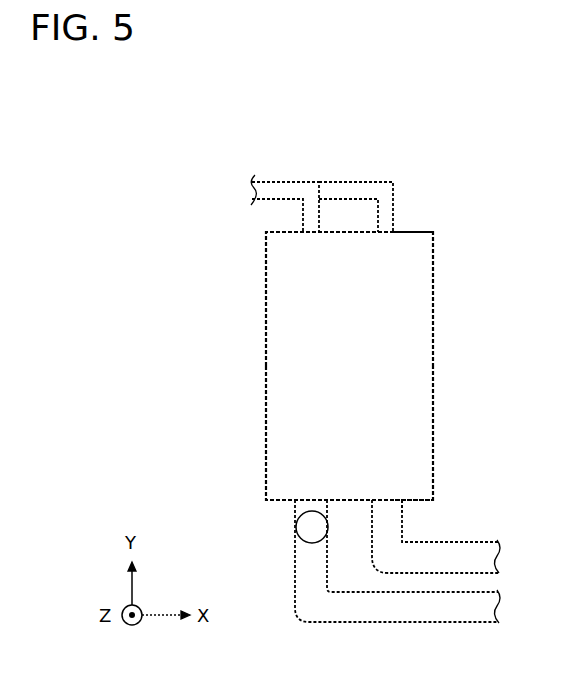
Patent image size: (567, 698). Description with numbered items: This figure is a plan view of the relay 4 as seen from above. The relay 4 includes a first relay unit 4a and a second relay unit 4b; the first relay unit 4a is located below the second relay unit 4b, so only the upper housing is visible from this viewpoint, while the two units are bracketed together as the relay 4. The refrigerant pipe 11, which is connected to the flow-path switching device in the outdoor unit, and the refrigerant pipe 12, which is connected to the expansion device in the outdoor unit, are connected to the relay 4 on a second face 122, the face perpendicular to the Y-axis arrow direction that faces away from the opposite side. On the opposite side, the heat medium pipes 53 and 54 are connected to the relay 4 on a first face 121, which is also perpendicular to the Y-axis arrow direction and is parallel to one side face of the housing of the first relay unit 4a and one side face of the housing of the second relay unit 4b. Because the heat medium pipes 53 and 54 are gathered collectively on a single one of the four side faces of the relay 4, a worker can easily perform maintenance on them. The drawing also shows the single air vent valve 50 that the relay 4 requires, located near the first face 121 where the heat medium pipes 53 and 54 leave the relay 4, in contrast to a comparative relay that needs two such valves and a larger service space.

The relay 4 is at (408, 366).
The first relay unit 4a is at (433, 386).
The second relay unit 4b is at (426, 322).
The refrigerant pipe 11 is at (283, 182).
The refrigerant pipe 12 is at (378, 182).
The first face 121 is at (413, 502).
The second face 122 is at (410, 232).
The air vent valve 50 is at (296, 525).
The heat medium pipe 53 is at (456, 622).
The heat medium pipe 54 is at (499, 542).